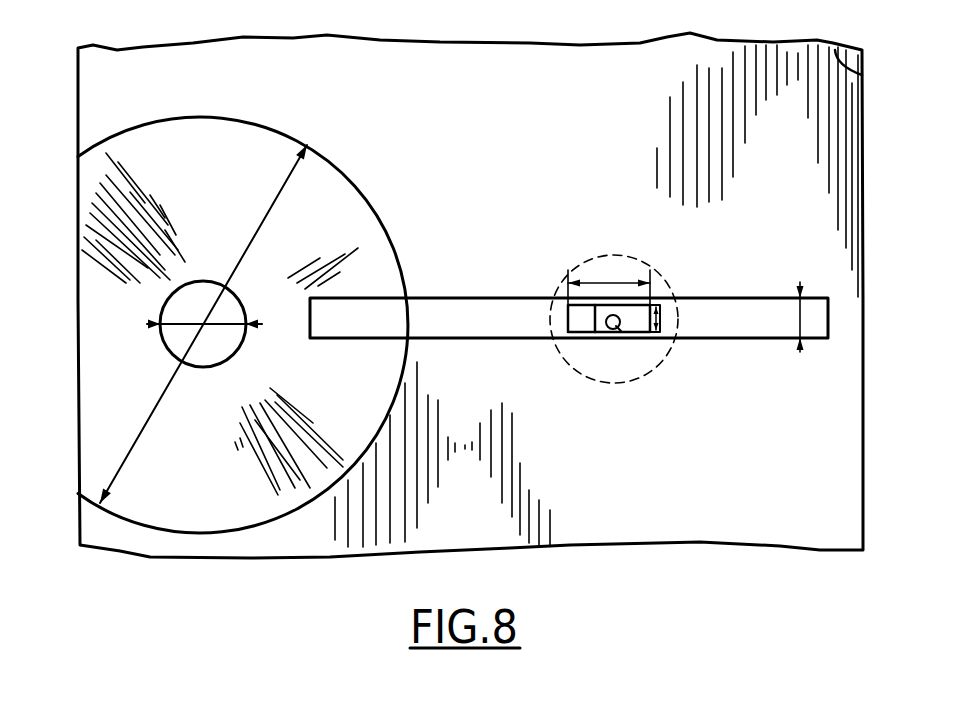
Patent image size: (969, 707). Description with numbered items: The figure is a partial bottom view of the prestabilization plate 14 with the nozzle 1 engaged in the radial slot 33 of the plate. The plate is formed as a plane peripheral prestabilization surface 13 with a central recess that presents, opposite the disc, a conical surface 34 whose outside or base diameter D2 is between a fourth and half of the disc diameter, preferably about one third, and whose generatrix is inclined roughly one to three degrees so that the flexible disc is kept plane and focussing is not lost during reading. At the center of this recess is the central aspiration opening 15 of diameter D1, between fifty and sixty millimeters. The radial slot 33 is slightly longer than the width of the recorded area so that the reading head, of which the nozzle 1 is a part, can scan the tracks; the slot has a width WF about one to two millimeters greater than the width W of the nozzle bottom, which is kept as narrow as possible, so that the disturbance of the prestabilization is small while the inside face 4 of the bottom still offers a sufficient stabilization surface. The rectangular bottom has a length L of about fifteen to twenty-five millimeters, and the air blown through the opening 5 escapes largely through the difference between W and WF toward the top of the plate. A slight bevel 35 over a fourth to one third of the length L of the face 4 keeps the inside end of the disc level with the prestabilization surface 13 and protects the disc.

The nozzle 1 is at (684, 312).
The inside face 4 is at (645, 311).
The opening 5 is at (617, 328).
The prestabilization surface 13 is at (593, 67).
The prestabilization plate 14 is at (835, 50).
The central aspiration opening 15 is at (212, 361).
The radial slot 33 is at (453, 338).
The conical surface 34 is at (237, 516).
The bevel 35 is at (582, 326).
The diameter of central aspiration opening D1 is at (223, 322).
The outside diameter of conical surface D2 is at (203, 324).
The length of nozzle bottom L is at (609, 282).
The width of nozzle bottom W is at (660, 322).
The width of slit WF is at (784, 317).